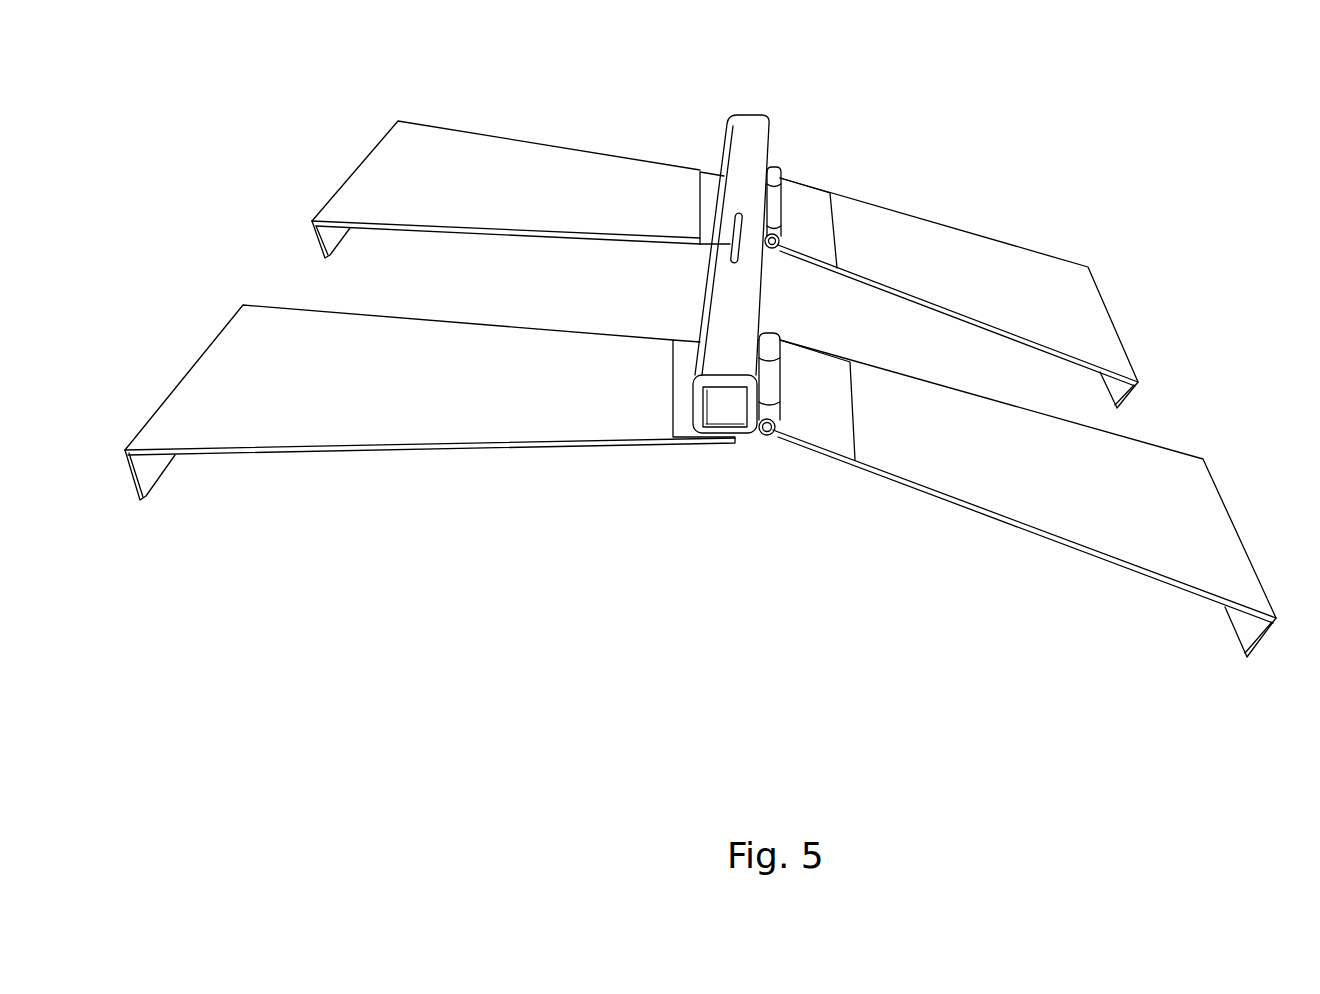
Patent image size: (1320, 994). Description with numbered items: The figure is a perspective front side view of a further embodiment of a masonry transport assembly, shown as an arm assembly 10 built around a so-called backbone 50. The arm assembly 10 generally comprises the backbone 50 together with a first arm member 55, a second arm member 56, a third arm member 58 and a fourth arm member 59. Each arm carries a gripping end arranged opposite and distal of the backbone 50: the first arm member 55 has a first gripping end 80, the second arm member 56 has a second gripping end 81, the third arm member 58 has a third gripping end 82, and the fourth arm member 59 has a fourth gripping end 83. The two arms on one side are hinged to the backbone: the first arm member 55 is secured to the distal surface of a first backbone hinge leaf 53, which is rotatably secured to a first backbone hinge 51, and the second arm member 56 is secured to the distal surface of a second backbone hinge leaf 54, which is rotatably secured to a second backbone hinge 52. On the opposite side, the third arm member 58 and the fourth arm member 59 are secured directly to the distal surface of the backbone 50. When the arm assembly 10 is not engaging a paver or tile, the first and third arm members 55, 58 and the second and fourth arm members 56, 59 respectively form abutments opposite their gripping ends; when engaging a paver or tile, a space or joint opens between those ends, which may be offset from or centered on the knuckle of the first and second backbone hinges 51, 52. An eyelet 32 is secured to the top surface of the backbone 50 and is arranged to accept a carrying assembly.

The arm assembly 10 is at (695, 510).
The eyelet 32 is at (737, 206).
The backbone 50 is at (723, 316).
The first backbone hinge 51 is at (778, 167).
The second backbone hinge 52 is at (767, 342).
The first backbone hinge leaf 53 is at (805, 200).
The second backbone hinge leaf 54 is at (820, 380).
The first arm member 55 is at (1018, 272).
The second arm member 56 is at (1157, 465).
The third arm member 58 is at (497, 158).
The fourth arm member 59 is at (303, 337).
The first gripping end 80 is at (1135, 393).
The second gripping end 81 is at (1230, 647).
The third gripping end 82 is at (338, 250).
The fourth gripping end 83 is at (155, 492).